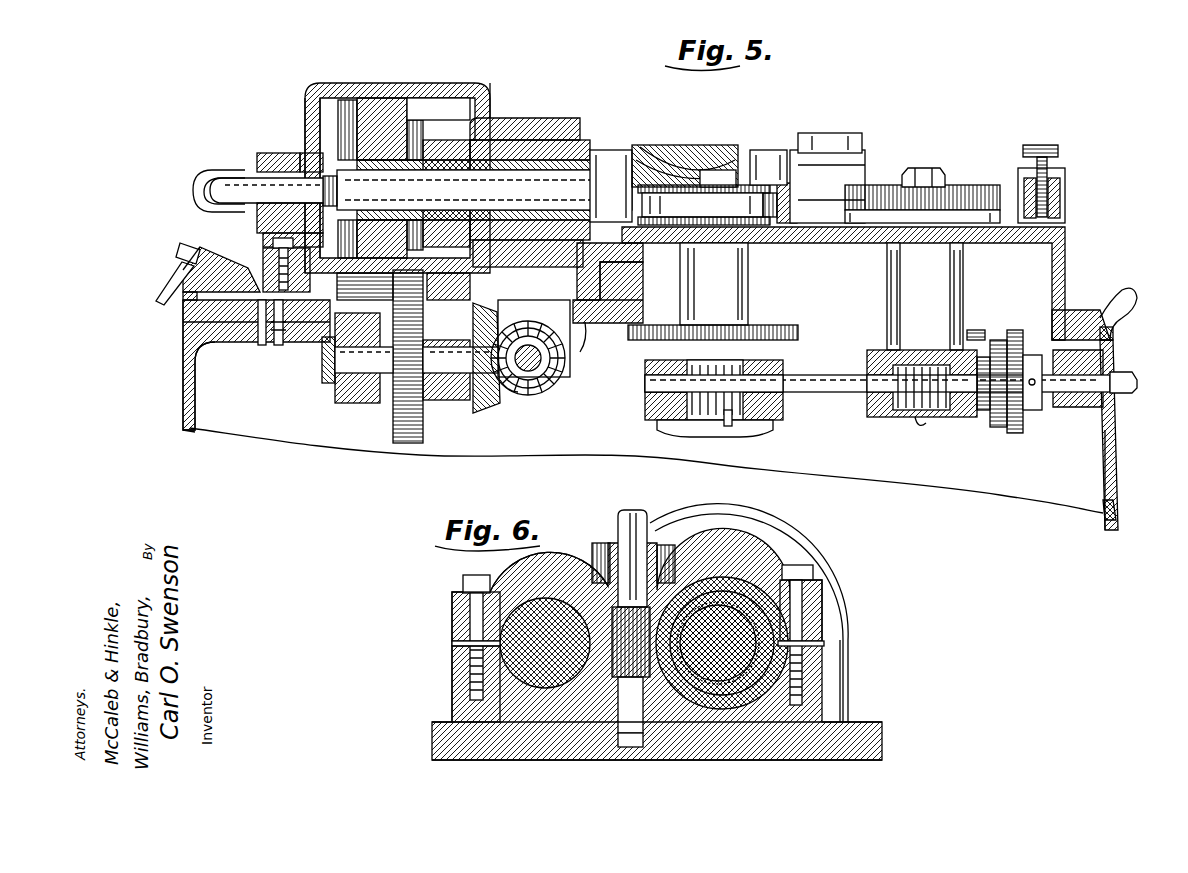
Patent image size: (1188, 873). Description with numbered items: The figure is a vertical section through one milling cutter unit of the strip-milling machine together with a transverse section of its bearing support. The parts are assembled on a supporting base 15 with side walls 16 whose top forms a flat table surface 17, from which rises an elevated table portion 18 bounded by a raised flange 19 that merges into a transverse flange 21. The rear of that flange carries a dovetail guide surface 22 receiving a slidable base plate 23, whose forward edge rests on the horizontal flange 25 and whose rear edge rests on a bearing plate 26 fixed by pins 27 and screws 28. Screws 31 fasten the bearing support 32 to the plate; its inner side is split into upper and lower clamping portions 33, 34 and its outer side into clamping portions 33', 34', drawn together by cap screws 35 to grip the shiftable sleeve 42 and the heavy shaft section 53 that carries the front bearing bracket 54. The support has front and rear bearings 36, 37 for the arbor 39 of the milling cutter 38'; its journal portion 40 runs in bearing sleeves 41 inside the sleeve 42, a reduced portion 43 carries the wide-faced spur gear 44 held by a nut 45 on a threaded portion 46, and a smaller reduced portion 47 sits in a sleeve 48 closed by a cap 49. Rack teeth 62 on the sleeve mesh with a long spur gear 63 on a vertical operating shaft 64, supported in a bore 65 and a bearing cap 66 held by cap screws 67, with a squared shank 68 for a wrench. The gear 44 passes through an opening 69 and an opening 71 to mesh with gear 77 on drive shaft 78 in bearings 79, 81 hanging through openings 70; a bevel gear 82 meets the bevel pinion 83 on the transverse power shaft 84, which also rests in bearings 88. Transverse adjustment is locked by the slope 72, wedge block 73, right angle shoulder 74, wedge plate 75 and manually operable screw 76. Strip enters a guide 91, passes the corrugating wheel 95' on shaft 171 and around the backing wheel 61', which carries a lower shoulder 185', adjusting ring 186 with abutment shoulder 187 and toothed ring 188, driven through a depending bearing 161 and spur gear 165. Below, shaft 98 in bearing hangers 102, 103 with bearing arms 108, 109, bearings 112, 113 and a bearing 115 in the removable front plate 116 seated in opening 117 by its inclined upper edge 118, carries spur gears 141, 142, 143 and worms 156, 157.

In FIG. 5, the supporting base 15 is at (191, 431).
In FIG. 5, the side walls 16 is at (183, 405).
In FIG. 5, the flat table surface 17 is at (1077, 310).
In FIG. 5, the elevated table portion 18 is at (1066, 246).
In FIG. 5, the raised flange 19 is at (1132, 297).
In FIG. 5, the transverse flange 21 is at (636, 270).
In FIG. 5, the dovetail guide surface 22 is at (635, 292).
In FIG. 5, the base plates 23 is at (350, 299).
In FIG. 5, the horizontal flange 25 is at (553, 338).
In FIG. 5, the bearing plates 26 is at (184, 326).
In FIG. 5, the pins 27 is at (259, 341).
In FIG. 5, the screws 28 is at (278, 341).
In FIG. 5, the screws 31 is at (280, 244).
In FIG. 5, the bearing support 32 is at (388, 82).
In FIG. 6, the bearing support 32 is at (829, 561).
In FIG. 5, the upper clamping portion 33 is at (296, 185).
In FIG. 6, the upper clamping portion 33 is at (833, 610).
In FIG. 5, the lower clamping portion 34 is at (276, 231).
In FIG. 6, the lower clamping portion 34 is at (837, 642).
In FIG. 6, the cap screws 35 is at (500, 584).
In FIG. 5, the front bearing 36 is at (566, 126).
In FIG. 5, the rear bearing 37 is at (276, 154).
In FIG. 5, the milling cutter 38' is at (722, 151).
In FIG. 5, the arbor 39 is at (610, 152).
In FIG. 5, the journal portion 40 is at (568, 160).
In FIG. 5, the bearing sleeves 41 is at (482, 166).
In FIG. 5, the shiftable sleeve 42 is at (452, 148).
In FIG. 5, the reduced portion 43 is at (418, 196).
In FIG. 5, the wide-faced spur gear 44 is at (415, 118).
In FIG. 5, the nut 45 is at (310, 158).
In FIG. 5, the threaded portion 46 is at (374, 176).
In FIG. 5, the reduced portion 47 is at (236, 182).
In FIG. 5, the sleeve 48 is at (257, 216).
In FIG. 5, the cap 49 is at (200, 203).
In FIG. 6, the shaft section 53 is at (551, 594).
In FIG. 5, the front bearing bracket 54 is at (833, 146).
In FIG. 5, the backing wheel 61' is at (768, 151).
In FIG. 6, the rack teeth 62 is at (702, 558).
In FIG. 6, the long spur gear 63 is at (592, 582).
In FIG. 6, the vertical operating shaft 64 is at (620, 706).
In FIG. 6, the bore 65 is at (452, 731).
In FIG. 6, the bearing cap 66 is at (618, 546).
In FIG. 6, the cap screws 67 is at (598, 556).
In FIG. 6, the squared shank 68 is at (645, 518).
In FIG. 5, the opening 69 is at (500, 226).
In FIG. 5, the openings 70 is at (328, 346).
In FIG. 5, the opening 71 is at (492, 281).
In FIG. 5, the slope 72 is at (186, 287).
In FIG. 5, the wedge block 73 is at (236, 262).
In FIG. 5, the right angle shoulder 74 is at (183, 298).
In FIG. 5, the wedge plate 75 is at (180, 272).
In FIG. 5, the manually operable screw 76 is at (178, 255).
In FIG. 5, the gear 77 is at (396, 442).
In FIG. 5, the drive shaft 78 is at (340, 362).
In FIG. 5, the bearing 79 is at (356, 382).
In FIG. 5, the bearing 81 is at (447, 390).
In FIG. 5, the bevel gear 82 is at (500, 402).
In FIG. 5, the bevel pinion 83 is at (530, 394).
In FIG. 5, the transverse power shaft 84 is at (563, 372).
In FIG. 5, the bearings 88 is at (560, 386).
In FIG. 5, the guide 91 is at (1071, 200).
In FIG. 5, the corrugating wheel 95' is at (922, 189).
In FIG. 5, the shaft 98 is at (836, 377).
In FIG. 5, the rear bearing hanger 102 is at (690, 438).
In FIG. 5, the front bearing hanger 103 is at (916, 424).
In FIG. 5, the bearing arm 108 is at (648, 406).
In FIG. 5, the bearing arm 109 is at (815, 398).
In FIG. 5, the bearing 112 is at (877, 350).
In FIG. 5, the bearing 113 is at (985, 344).
In FIG. 5, the bearing 115 is at (1085, 410).
In FIG. 5, the removable front plate 116 is at (1116, 441).
In FIG. 5, the opening 117 is at (1101, 508).
In FIG. 5, the inclined upper edge 118 is at (1114, 336).
In FIG. 5, the spur gear 141 is at (984, 411).
In FIG. 5, the spur gear 142 is at (999, 428).
In FIG. 5, the spur gear 143 is at (1015, 434).
In FIG. 5, the worm 156 is at (890, 416).
In FIG. 5, the second worm 157 is at (730, 426).
In FIG. 5, the depending bearing 161 is at (752, 290).
In FIG. 5, the spur gear 165 is at (785, 326).
In FIG. 5, the shaft 171 is at (926, 168).
In FIG. 5, the lower shoulder 185' is at (802, 227).
In FIG. 5, the adjusting ring 186 is at (722, 217).
In FIG. 5, the abutment shoulder 187 is at (752, 228).
In FIG. 5, the toothed ring 188 is at (673, 183).
In FIG. 6, the upper clamping portion 33' is at (451, 616).
In FIG. 6, the lower clamping portion 34' is at (446, 681).